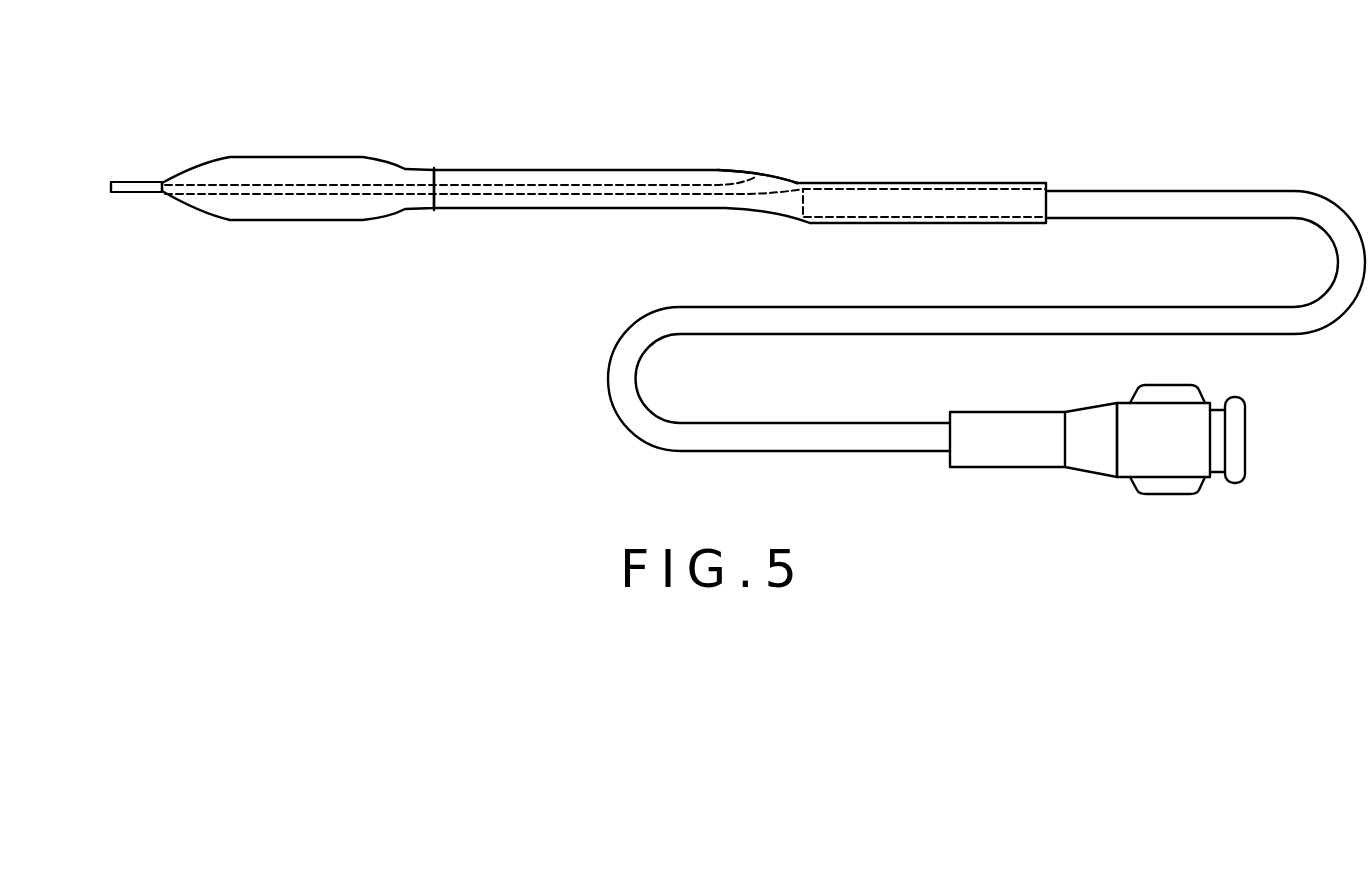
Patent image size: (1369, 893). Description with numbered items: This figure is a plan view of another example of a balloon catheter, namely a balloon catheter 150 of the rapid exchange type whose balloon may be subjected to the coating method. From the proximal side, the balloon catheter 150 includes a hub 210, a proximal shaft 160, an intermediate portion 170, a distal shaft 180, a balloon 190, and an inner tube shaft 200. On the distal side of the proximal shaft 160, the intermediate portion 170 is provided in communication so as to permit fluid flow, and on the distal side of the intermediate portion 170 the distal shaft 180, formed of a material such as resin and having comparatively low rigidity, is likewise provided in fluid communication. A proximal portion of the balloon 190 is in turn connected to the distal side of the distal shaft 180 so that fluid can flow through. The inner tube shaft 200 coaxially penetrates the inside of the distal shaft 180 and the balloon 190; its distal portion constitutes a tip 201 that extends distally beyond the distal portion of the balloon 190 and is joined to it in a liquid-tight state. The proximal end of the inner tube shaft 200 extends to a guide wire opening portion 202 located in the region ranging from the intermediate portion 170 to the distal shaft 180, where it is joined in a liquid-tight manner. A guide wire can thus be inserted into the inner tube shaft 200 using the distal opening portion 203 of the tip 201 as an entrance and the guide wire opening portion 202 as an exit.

The balloon catheter 150 is at (218, 57).
The proximal shaft 160 is at (1147, 203).
The intermediate portion 170 is at (902, 197).
The distal shaft 180 is at (603, 182).
The balloon 190 is at (328, 167).
The inner tube shaft 200 is at (215, 183).
The tip 201 is at (135, 193).
The guide wire opening portion 202 is at (773, 177).
The distal opening portion 203 is at (110, 181).
The hub 210 is at (1158, 467).